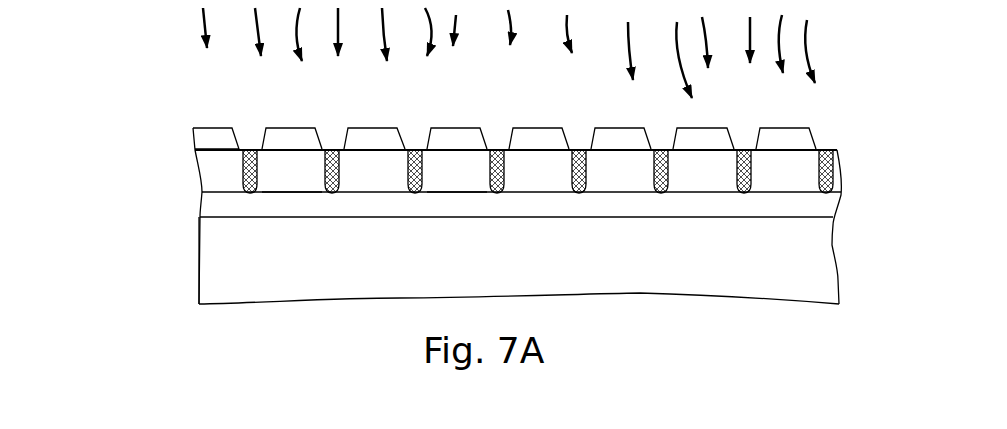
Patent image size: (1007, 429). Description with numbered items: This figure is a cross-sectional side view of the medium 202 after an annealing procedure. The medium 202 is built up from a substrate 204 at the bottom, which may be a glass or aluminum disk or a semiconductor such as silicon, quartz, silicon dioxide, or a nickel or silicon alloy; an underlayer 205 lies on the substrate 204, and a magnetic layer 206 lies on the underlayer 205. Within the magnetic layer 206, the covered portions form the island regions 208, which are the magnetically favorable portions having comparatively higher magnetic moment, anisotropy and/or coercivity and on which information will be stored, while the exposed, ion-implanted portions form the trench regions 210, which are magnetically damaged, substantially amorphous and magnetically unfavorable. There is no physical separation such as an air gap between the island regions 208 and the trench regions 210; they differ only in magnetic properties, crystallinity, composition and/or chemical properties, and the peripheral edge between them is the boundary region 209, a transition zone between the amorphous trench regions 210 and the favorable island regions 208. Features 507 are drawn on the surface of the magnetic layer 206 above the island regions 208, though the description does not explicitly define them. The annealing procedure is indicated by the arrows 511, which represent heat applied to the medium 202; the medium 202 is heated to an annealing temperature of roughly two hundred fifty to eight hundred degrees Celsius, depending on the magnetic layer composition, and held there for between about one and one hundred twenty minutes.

The medium 202 is at (110, 67).
The substrate 204 is at (202, 241).
The underlayer 205 is at (208, 200).
The magnetic layer 206 is at (208, 165).
The patterned cap feature 507 is at (204, 136).
The island regions 208 is at (375, 148).
The boundary region 209 is at (480, 172).
The trench regions 210 is at (577, 150).
The arrows 511 is at (832, 20).